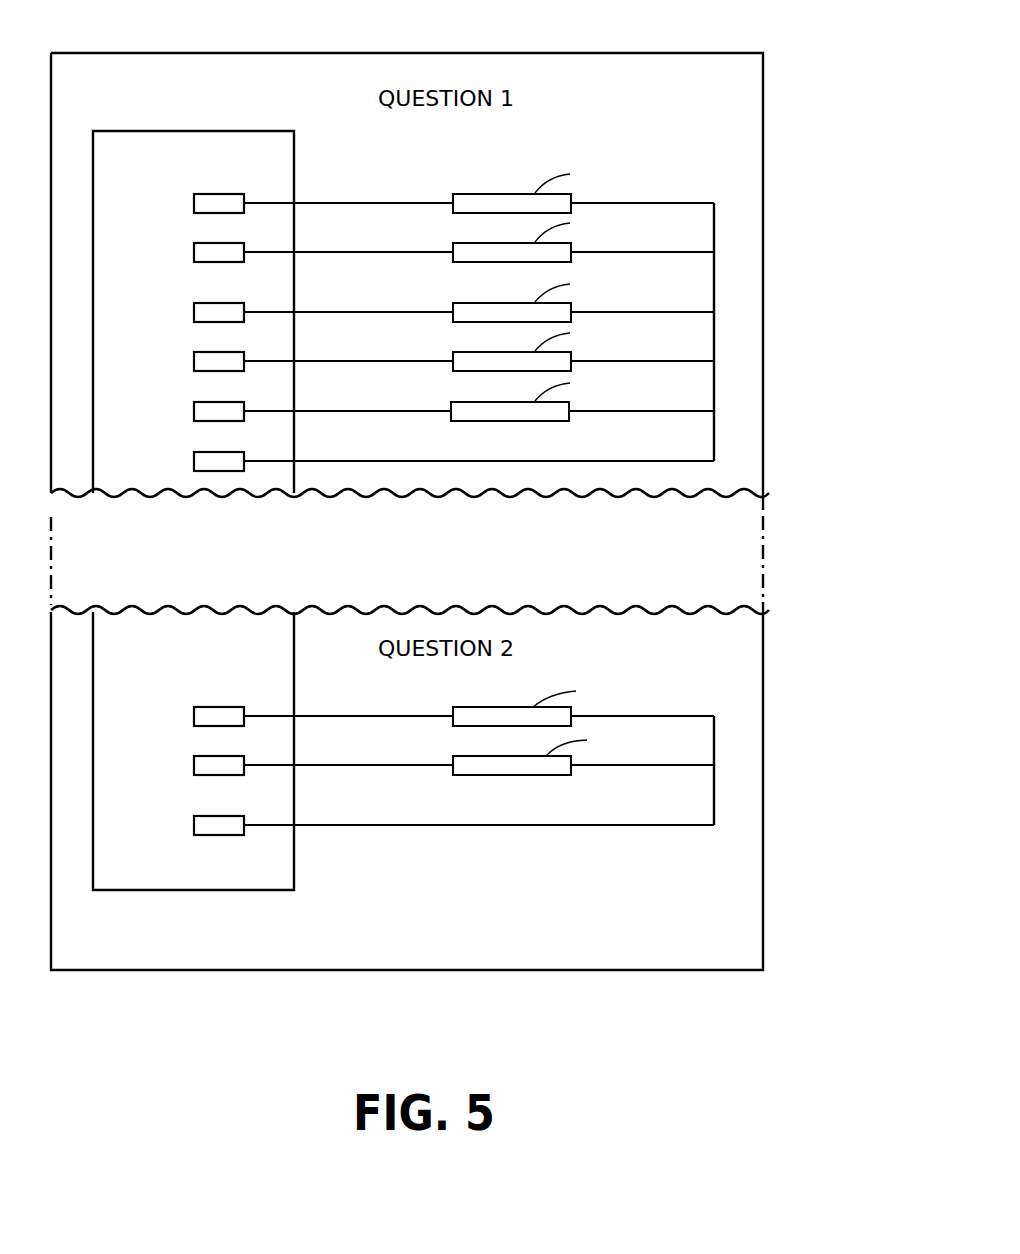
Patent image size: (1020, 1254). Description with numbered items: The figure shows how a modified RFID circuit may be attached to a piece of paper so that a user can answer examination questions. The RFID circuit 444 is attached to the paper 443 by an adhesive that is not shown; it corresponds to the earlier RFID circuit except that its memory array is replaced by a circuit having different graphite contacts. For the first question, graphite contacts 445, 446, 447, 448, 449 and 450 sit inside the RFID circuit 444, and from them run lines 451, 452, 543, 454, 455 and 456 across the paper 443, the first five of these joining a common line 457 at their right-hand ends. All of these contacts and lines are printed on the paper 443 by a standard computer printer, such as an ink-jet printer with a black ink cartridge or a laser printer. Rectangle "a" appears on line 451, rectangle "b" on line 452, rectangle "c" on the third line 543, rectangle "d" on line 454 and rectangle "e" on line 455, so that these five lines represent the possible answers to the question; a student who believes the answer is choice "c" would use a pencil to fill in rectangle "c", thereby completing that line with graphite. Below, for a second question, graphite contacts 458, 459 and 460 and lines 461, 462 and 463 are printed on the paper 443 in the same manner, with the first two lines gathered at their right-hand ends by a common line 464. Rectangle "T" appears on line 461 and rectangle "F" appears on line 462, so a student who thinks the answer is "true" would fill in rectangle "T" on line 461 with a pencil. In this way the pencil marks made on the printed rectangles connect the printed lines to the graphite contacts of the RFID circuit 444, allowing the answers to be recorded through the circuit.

The paper 443 is at (621, 72).
The RFID circuit 444 is at (233, 147).
The graphite contact 445 is at (196, 195).
The graphite contact 446 is at (200, 244).
The graphite contact 447 is at (196, 304).
The graphite contact 448 is at (196, 353).
The graphite contact 449 is at (196, 403).
The graphite contact 450 is at (196, 453).
The line 451 is at (396, 200).
The line 452 is at (396, 249).
The answer line c 543 is at (396, 309).
The line 454 is at (396, 358).
The line 455 is at (396, 408).
The line 456 is at (396, 458).
The line 457 is at (715, 337).
The graphite contact 458 is at (196, 708).
The graphite contact 459 is at (200, 757).
The graphite contact 460 is at (196, 817).
The line 461 is at (396, 713).
The line 462 is at (396, 762).
The line 463 is at (396, 822).
The common bus line 464 is at (715, 752).